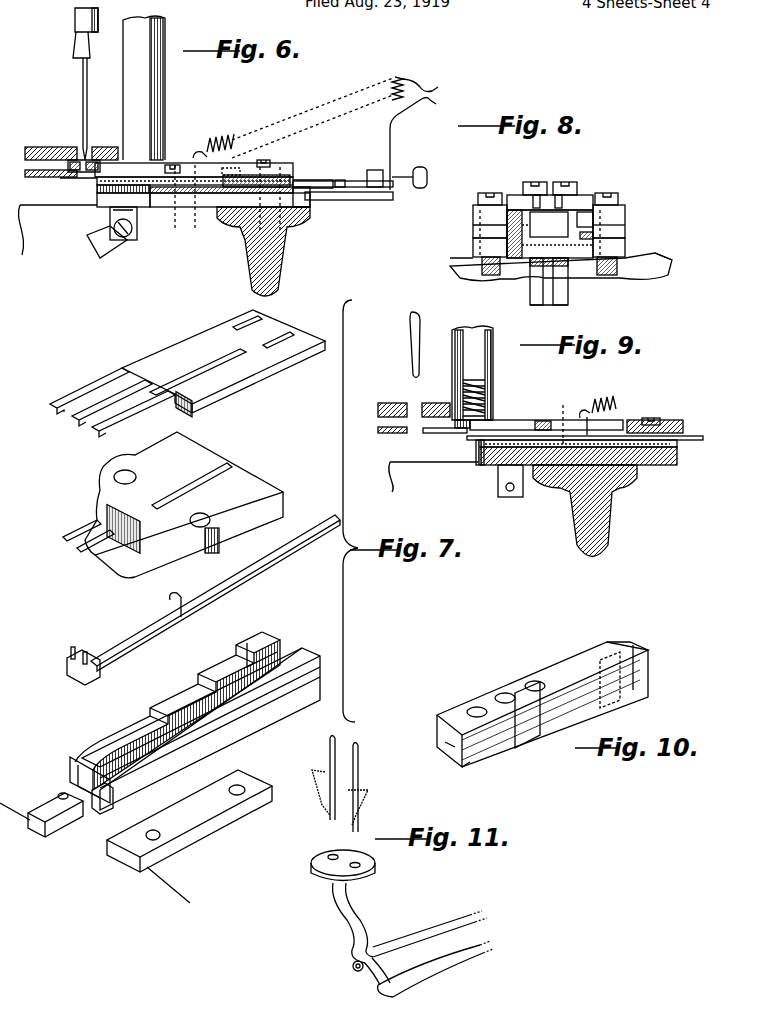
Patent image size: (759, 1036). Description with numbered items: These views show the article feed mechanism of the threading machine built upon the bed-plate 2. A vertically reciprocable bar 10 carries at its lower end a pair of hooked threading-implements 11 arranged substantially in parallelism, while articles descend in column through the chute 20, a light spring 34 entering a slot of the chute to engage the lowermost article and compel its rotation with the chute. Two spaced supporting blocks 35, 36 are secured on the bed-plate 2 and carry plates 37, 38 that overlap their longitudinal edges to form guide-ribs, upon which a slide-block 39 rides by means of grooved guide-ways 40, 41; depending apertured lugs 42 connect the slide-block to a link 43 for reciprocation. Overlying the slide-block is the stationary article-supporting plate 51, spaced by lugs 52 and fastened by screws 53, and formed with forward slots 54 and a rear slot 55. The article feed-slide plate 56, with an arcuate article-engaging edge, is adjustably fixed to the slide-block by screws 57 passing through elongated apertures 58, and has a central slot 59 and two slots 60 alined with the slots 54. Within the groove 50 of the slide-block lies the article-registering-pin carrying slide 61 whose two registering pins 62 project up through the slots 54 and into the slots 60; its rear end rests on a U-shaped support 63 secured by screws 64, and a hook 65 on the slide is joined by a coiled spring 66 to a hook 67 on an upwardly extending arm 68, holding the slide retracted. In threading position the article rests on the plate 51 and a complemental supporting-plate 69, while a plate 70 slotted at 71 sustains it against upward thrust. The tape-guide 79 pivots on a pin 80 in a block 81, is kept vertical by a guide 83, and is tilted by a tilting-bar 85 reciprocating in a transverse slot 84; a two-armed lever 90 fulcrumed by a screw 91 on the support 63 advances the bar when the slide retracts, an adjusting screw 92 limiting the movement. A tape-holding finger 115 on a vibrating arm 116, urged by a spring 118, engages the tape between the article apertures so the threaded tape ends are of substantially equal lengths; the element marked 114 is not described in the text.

In FIG. 6, the bed-plate 2 is at (306, 218).
In FIG. 8, the bed-plate 2 is at (640, 268).
In FIG. 9, the bed-plate 2 is at (637, 480).
In FIG. 7, the bed-plate 2 is at (160, 888).
In FIG. 6, the bar 10 is at (75, 12).
In FIG. 6, the hooked threading-implements 11 is at (82, 92).
In FIG. 9, the hooked threading-implements 11 is at (410, 335).
In FIG. 11, the hooked threading-implements 11 is at (353, 772).
In FIG. 6, the chute 20 is at (165, 80).
In FIG. 9, the chute 20 is at (493, 334).
In FIG. 9, the spring 34 is at (493, 386).
In FIG. 8, the supporting block 35 is at (473, 245).
In FIG. 9, the supporting block 35 is at (480, 462).
In FIG. 7, the supporting block 35 is at (35, 828).
In FIG. 6, the supporting block 36 is at (215, 200).
In FIG. 8, the supporting block 36 is at (625, 245).
In FIG. 7, the supporting block 36 is at (125, 866).
In FIG. 8, the plate 37 is at (473, 230).
In FIG. 9, the plate 37 is at (482, 443).
In FIG. 7, the plate 37 is at (50, 793).
In FIG. 6, the plate 38 is at (311, 200).
In FIG. 8, the plate 38 is at (625, 230).
In FIG. 7, the plate 38 is at (180, 805).
In FIG. 6, the slide-block 39 is at (105, 200).
In FIG. 8, the slide-block 39 is at (533, 268).
In FIG. 9, the slide-block 39 is at (678, 458).
In FIG. 7, the slide-block 39 is at (72, 760).
In FIG. 8, the grooved guide-way 40 is at (480, 245).
In FIG. 6, the grooved guide-way 41 is at (98, 201).
In FIG. 8, the grooved guide-way 41 is at (568, 270).
In FIG. 7, the grooved guide-way 41 is at (225, 727).
In FIG. 6, the apertured lugs 42 is at (137, 230).
In FIG. 8, the apertured lugs 42 is at (550, 302).
In FIG. 9, the apertured lugs 42 is at (498, 488).
In FIG. 7, the apertured lugs 42 is at (112, 800).
In FIG. 6, the link 43 is at (116, 251).
In FIG. 8, the groove 50 is at (555, 247).
In FIG. 7, the groove 50 is at (278, 642).
In FIG. 6, the article-supporting plate 51 is at (133, 163).
In FIG. 8, the article-supporting plate 51 is at (588, 195).
In FIG. 9, the article-supporting plate 51 is at (437, 433).
In FIG. 7, the article-supporting plate 51 is at (250, 480).
In FIG. 6, the spacing lugs 52 is at (229, 173).
In FIG. 8, the spacing lugs 52 is at (473, 212).
In FIG. 9, the spacing lugs 52 is at (562, 420).
In FIG. 7, the spacing lugs 52 is at (210, 550).
In FIG. 6, the screws 53 is at (173, 165).
In FIG. 8, the screws 53 is at (480, 193).
In FIG. 7, the slots 54 is at (72, 545).
In FIG. 7, the slot 55 is at (180, 490).
In FIG. 6, the article feed-slide plate 56 is at (286, 175).
In FIG. 8, the article feed-slide plate 56 is at (525, 182).
In FIG. 9, the article feed-slide plate 56 is at (541, 421).
In FIG. 7, the article feed-slide plate 56 is at (186, 345).
In FIG. 6, the screws 57 is at (266, 160).
In FIG. 8, the screws 57 is at (562, 182).
In FIG. 9, the screws 57 is at (655, 418).
In FIG. 7, the elongated apertures 58 is at (290, 332).
In FIG. 9, the central slot 59 is at (640, 420).
In FIG. 7, the central slot 59 is at (200, 357).
In FIG. 8, the slots 60 is at (536, 195).
In FIG. 9, the slots 60 is at (510, 420).
In FIG. 7, the slots 60 is at (80, 420).
In FIG. 6, the article-registering-pin carrying slide 61 is at (99, 182).
In FIG. 8, the article-registering-pin carrying slide 61 is at (575, 240).
In FIG. 9, the article-registering-pin carrying slide 61 is at (695, 436).
In FIG. 7, the article-registering-pin carrying slide 61 is at (238, 583).
In FIG. 6, the article-registering pins 62 is at (78, 173).
In FIG. 8, the article-registering pins 62 is at (523, 200).
In FIG. 9, the article-registering pins 62 is at (465, 430).
In FIG. 7, the article-registering pins 62 is at (84, 651).
In FIG. 6, the U-shaped support 63 is at (371, 200).
In FIG. 6, the screws 64 is at (306, 180).
In FIG. 6, the hook 65 is at (203, 151).
In FIG. 9, the hook 65 is at (585, 410).
In FIG. 7, the hook 65 is at (170, 598).
In FIG. 6, the coiled spring 66 is at (233, 139).
In FIG. 9, the coiled spring 66 is at (612, 398).
In FIG. 6, the hook 67 is at (426, 101).
In FIG. 6, the arm 68 is at (392, 152).
In FIG. 6, the complemental supporting-plate 69 is at (36, 177).
In FIG. 9, the complemental supporting-plate 69 is at (392, 433).
In FIG. 6, the plate 70 is at (57, 147).
In FIG. 9, the plate 70 is at (390, 403).
In FIG. 6, the slot 71 is at (101, 147).
In FIG. 10, the tape-guide 79 is at (480, 768).
In FIG. 10, the pin 80 is at (447, 742).
In FIG. 10, the block 81 is at (472, 710).
In FIG. 10, the guide 83 is at (530, 746).
In FIG. 10, the transverse slot 84 is at (598, 712).
In FIG. 6, the tape-guide tilting-bar 85 is at (332, 177).
In FIG. 6, the two-armed lever 90 is at (373, 170).
In FIG. 6, the screw 91 is at (346, 181).
In FIG. 6, the adjusting screw 92 is at (420, 189).
In FIG. 10, the block 114 is at (655, 652).
In FIG. 11, the tape-holding finger 115 is at (337, 909).
In FIG. 11, the vibrating arm 116 is at (435, 930).
In FIG. 11, the spring 118 is at (425, 978).